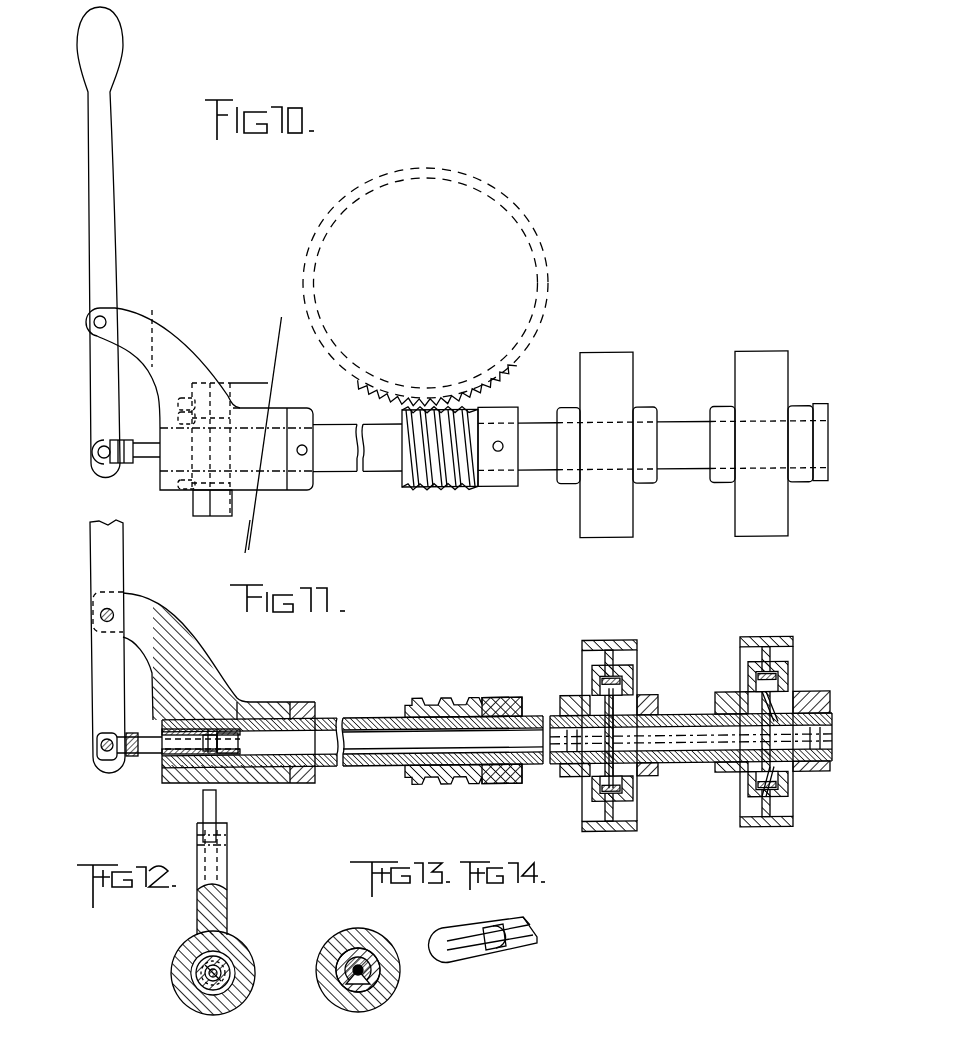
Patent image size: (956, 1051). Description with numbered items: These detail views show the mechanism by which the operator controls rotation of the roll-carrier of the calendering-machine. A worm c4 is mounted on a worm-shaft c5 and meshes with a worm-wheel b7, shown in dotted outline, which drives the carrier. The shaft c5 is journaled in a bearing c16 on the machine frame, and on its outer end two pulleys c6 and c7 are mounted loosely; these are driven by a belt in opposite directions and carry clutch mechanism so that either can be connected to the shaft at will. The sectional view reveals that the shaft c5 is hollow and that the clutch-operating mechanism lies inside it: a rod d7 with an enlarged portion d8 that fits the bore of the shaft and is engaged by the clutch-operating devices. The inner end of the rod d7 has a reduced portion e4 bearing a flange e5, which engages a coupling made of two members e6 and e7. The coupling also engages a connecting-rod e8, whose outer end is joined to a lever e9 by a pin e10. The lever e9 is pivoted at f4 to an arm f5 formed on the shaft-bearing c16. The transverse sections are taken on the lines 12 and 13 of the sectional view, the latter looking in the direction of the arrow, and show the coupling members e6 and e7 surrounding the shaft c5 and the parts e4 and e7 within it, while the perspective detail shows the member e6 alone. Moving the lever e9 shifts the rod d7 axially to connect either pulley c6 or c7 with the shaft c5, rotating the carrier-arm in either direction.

In FIG. 10, the lever e9 is at (103, 407).
In FIG. 11, the lever e9 is at (100, 713).
In FIG. 10, the pivot f4 is at (98, 318).
In FIG. 11, the pivot f4 is at (100, 612).
In FIG. 12, the pivot f4 is at (197, 840).
In FIG. 10, the arm f5 is at (147, 318).
In FIG. 11, the arm f5 is at (143, 615).
In FIG. 12, the arm f5 is at (227, 873).
In FIG. 10, the bearing c16 is at (268, 458).
In FIG. 11, the bearing c16 is at (270, 702).
In FIG. 10, the pin e10 is at (100, 452).
In FIG. 11, the pin e10 is at (100, 745).
In FIG. 10, the connecting-rod e8 is at (145, 456).
In FIG. 11, the connecting-rod e8 is at (145, 753).
In FIG. 12, the connecting-rod e8 is at (178, 979).
In FIG. 10, the worm-wheel b7 is at (514, 372).
In FIG. 10, the worm-shaft c5 is at (390, 462).
In FIG. 11, the worm-shaft c5 is at (380, 766).
In FIG. 12, the worm-shaft c5 is at (252, 959).
In FIG. 13, the worm-shaft c5 is at (382, 984).
In FIG. 10, the worm c4 is at (430, 481).
In FIG. 11, the worm c4 is at (450, 779).
In FIG. 10, the pulley c6 is at (617, 388).
In FIG. 11, the pulley c6 is at (612, 642).
In FIG. 12, the pulley c6 is at (243, 979).
In FIG. 13, the pulley c6 is at (373, 942).
In FIG. 10, the pulley c7 is at (742, 364).
In FIG. 11, the pulley c7 is at (746, 640).
In FIG. 11, the section line 12 is at (250, 640).
In FIG. 11, the section line 13 is at (237, 700).
In FIG. 11, the coupling member e7 is at (163, 756).
In FIG. 12, the coupling member e7 is at (213, 975).
In FIG. 13, the coupling member e7 is at (330, 981).
In FIG. 11, the coupling member e6 is at (164, 732).
In FIG. 12, the coupling member e6 is at (222, 947).
In FIG. 13, the coupling member e6 is at (345, 957).
In FIG. 14, the coupling member e6 is at (480, 930).
In FIG. 11, the reduced portion e4 is at (238, 760).
In FIG. 13, the reduced portion e4 is at (345, 986).
In FIG. 11, the flange e5 is at (212, 760).
In FIG. 11, the rod d7 is at (375, 742).
In FIG. 11, the enlarged portion d8 is at (692, 743).